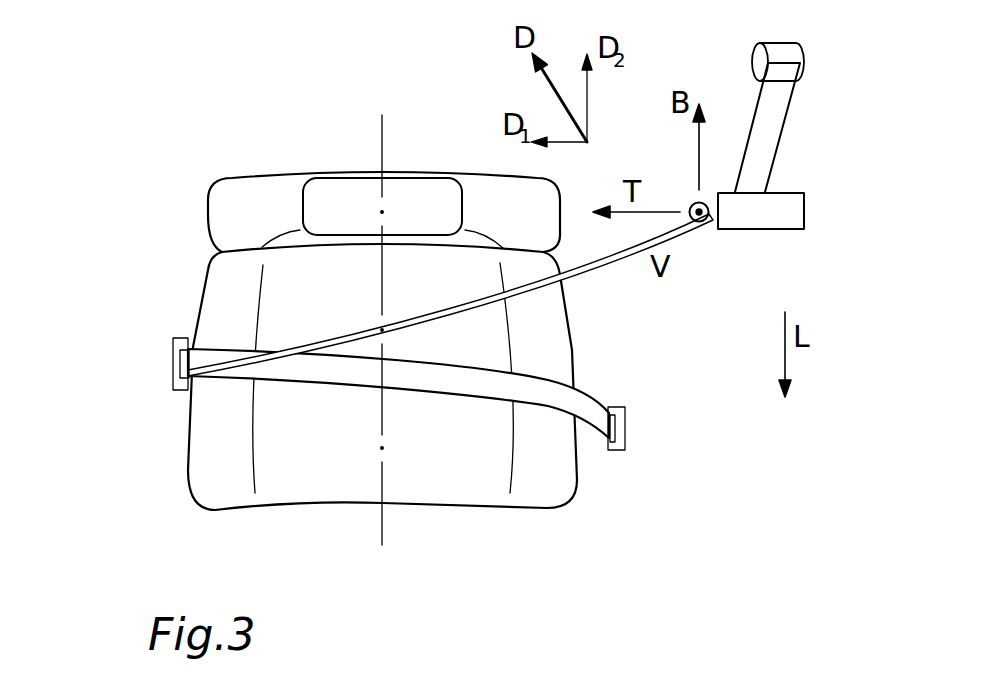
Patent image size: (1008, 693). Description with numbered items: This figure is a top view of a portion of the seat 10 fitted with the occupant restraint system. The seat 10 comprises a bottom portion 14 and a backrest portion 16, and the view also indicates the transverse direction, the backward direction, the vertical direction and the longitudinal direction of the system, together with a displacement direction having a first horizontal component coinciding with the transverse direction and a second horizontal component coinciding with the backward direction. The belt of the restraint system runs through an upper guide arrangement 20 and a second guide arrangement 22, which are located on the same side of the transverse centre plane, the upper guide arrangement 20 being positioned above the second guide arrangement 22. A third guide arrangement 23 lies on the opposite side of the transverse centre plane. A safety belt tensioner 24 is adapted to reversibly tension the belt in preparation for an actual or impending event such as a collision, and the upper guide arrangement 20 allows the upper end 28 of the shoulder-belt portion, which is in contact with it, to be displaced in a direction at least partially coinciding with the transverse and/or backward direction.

The seat 10 is at (154, 124).
The bottom portion 14 is at (436, 482).
The backrest portion 16 is at (235, 227).
The upper guide arrangement 20 is at (788, 205).
The second guide arrangement 22 is at (626, 433).
The third guide arrangement 23 is at (155, 374).
The safety belt tensioner 24 is at (752, 63).
The upper end of the shoulder-belt portion 28 is at (707, 241).